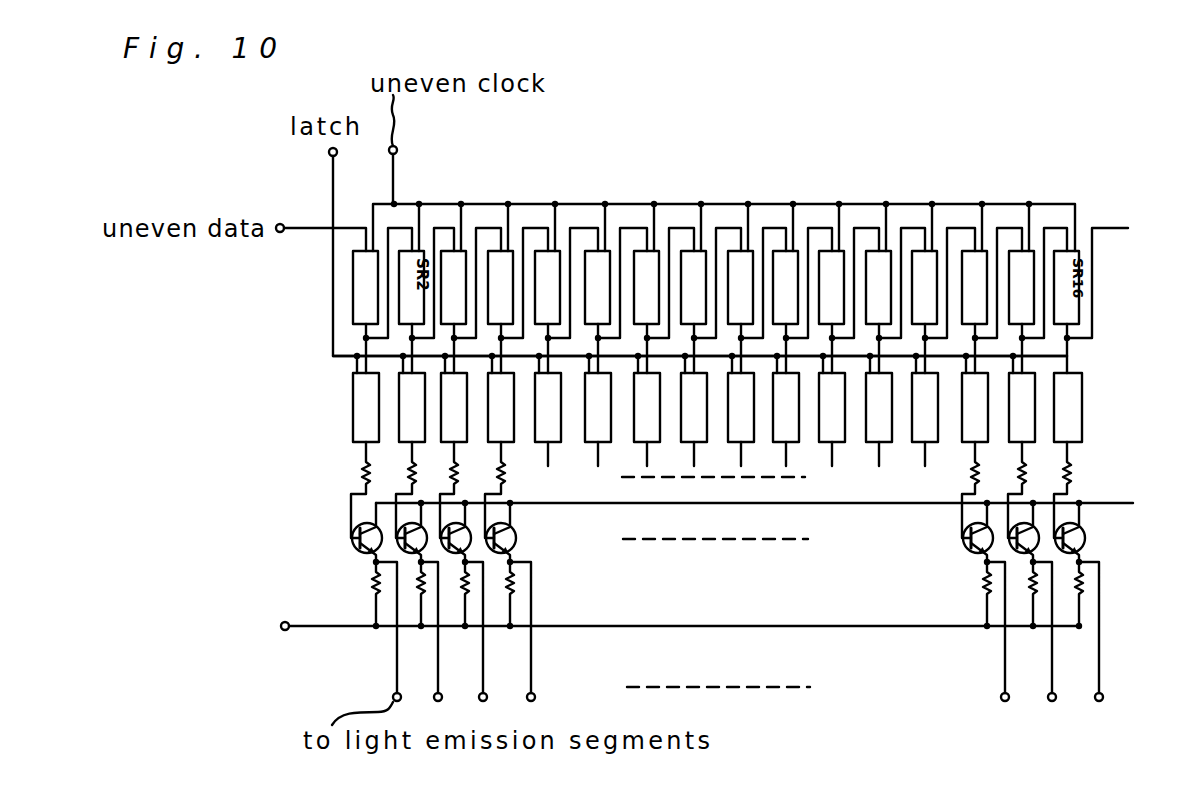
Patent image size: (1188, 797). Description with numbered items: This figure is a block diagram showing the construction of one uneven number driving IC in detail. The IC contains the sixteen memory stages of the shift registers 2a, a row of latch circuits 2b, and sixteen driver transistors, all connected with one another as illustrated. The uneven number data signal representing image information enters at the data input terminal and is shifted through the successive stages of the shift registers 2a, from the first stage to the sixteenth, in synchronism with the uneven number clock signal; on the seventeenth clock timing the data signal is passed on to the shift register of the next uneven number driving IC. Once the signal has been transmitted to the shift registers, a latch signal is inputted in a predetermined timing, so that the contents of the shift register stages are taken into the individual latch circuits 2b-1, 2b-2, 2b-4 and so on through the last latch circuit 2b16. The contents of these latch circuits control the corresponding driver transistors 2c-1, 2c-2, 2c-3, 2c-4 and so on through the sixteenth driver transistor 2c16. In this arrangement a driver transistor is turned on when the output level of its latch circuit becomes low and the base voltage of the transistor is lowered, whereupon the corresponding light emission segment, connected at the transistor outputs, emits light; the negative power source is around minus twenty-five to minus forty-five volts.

The shift registers 2a is at (348, 297).
The latch circuits 2b is at (306, 448).
The latch circuit 2b-1 is at (352, 395).
The latch circuit 2b-2 is at (400, 443).
The latch circuit 2b-4 is at (503, 456).
The latch circuit 2b16 is at (1072, 397).
The driver transistor 2c-1 is at (352, 545).
The driver transistor 2c-2 is at (407, 557).
The driver transistor 2c-3 is at (452, 551).
The driver transistor 2c-4 is at (517, 543).
The driver transistor 2c16 is at (1086, 538).